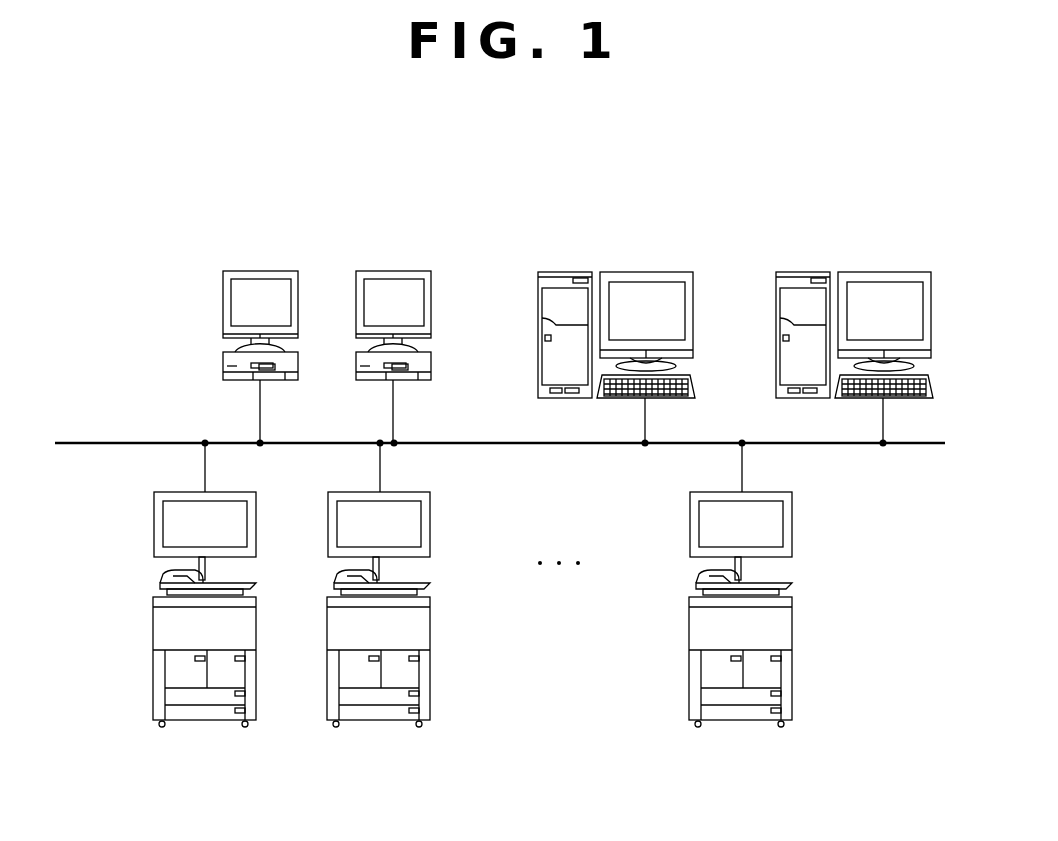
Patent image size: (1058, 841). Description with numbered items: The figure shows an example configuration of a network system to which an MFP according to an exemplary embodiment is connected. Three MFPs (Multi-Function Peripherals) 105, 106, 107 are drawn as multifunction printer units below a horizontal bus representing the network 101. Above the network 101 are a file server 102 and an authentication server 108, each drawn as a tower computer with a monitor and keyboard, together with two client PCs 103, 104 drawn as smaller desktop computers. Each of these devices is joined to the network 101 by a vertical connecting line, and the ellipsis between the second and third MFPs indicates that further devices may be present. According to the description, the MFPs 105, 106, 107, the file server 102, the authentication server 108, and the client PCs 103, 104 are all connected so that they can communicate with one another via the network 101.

The network 101 is at (102, 441).
The file server 102 is at (674, 271).
The client PC 103 is at (414, 270).
The client PC 104 is at (283, 270).
The MFP 105 is at (182, 724).
The MFP 106 is at (368, 724).
The MFP 107 is at (725, 724).
The authentication server 108 is at (905, 271).